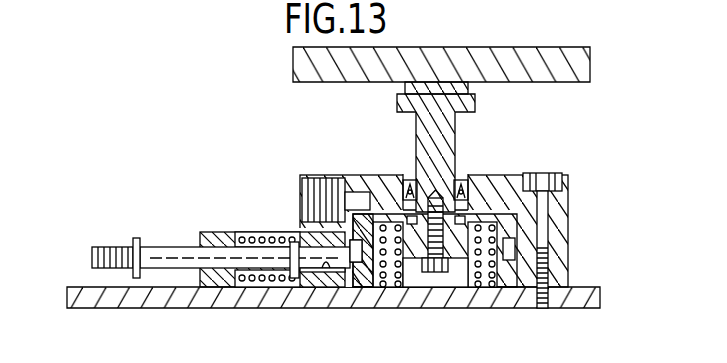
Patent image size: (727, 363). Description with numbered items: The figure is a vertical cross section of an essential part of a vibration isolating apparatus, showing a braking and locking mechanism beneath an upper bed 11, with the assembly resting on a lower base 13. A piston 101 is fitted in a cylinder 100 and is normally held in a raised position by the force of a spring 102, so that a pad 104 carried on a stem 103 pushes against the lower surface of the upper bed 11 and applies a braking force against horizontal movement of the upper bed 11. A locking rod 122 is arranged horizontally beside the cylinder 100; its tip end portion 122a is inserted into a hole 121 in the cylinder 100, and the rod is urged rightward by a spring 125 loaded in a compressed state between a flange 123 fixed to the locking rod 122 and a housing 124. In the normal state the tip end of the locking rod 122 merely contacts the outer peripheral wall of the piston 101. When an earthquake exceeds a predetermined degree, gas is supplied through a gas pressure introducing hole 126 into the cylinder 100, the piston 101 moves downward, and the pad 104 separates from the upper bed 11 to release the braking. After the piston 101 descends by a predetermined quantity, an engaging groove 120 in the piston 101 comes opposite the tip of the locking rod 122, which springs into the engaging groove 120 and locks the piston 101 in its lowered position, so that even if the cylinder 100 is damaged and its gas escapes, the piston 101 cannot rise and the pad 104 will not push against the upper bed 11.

The upper bed 11 is at (518, 49).
The base plate 13 is at (188, 308).
The cylinder 100 is at (562, 223).
The piston 101 is at (506, 277).
The spring 102 is at (483, 226).
The stem 103 is at (453, 153).
The pad 104 is at (437, 80).
The engaging groove 120 is at (357, 258).
The hole 121 is at (331, 263).
The locking rod 122 is at (158, 247).
The tip end portion 122a is at (301, 243).
The flange 123 is at (297, 275).
The housing 124 is at (212, 232).
The spring 125 is at (248, 281).
The gas pressure introducing hole 126 is at (302, 186).